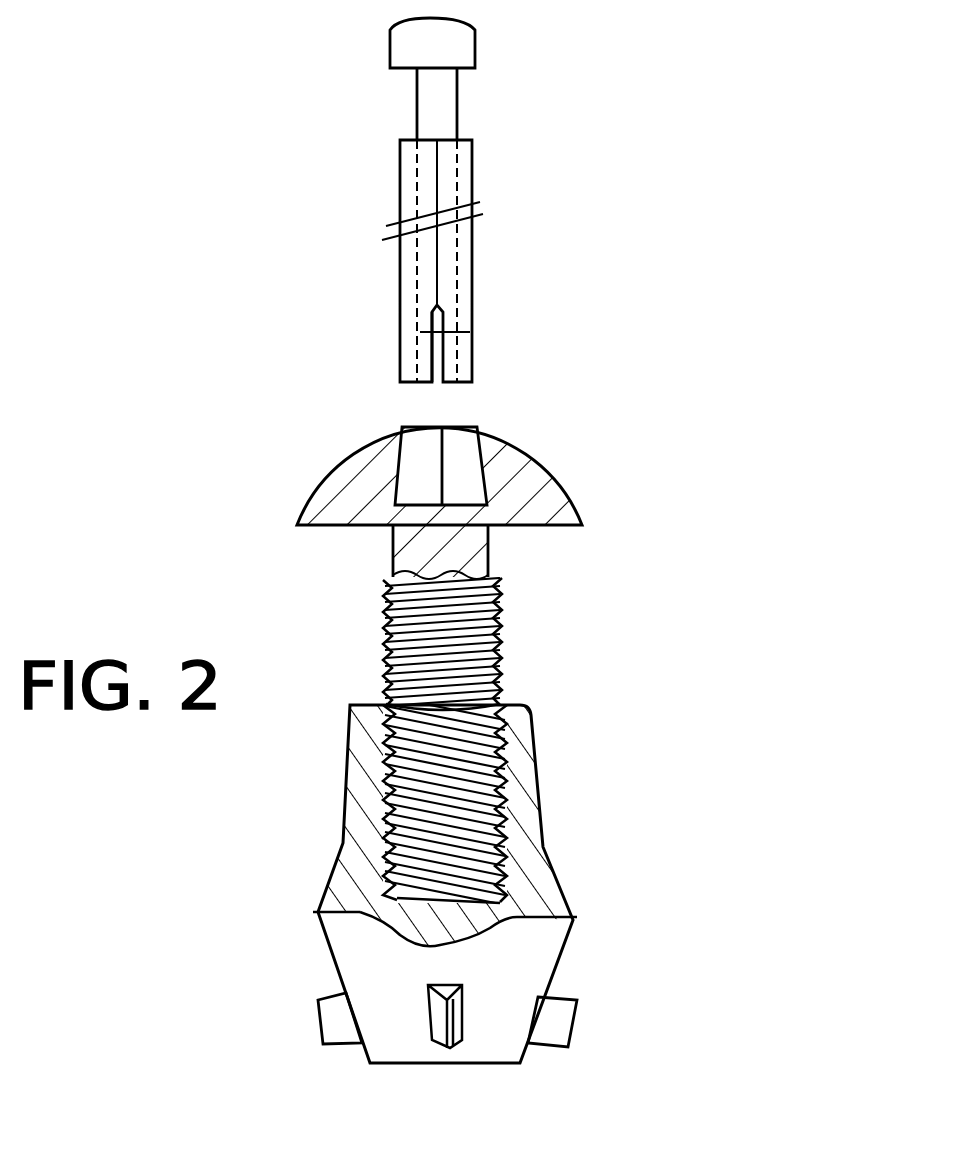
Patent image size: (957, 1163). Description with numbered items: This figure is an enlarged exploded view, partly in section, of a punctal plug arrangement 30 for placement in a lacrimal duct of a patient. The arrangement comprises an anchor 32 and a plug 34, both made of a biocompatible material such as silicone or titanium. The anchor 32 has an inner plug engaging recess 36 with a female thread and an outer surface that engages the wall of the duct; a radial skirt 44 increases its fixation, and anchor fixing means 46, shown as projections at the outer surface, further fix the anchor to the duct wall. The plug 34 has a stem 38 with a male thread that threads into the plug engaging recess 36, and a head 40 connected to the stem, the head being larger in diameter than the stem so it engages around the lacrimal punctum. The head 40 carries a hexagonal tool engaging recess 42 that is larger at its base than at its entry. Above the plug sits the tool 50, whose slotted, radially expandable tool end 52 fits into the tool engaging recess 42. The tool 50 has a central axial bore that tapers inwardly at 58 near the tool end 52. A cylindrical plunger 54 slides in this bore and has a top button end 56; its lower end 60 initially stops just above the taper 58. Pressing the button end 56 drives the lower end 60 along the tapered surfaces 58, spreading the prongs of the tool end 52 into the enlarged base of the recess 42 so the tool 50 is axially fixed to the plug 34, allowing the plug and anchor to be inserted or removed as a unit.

The punctal plug arrangement 30 is at (707, 582).
The anchor 32 is at (547, 857).
The plug 34 is at (570, 497).
The plug engaging recess 36 is at (473, 770).
The stem 38 is at (500, 623).
The head 40 is at (317, 480).
The tool engaging recess 42 is at (368, 415).
The radial skirt 44 is at (317, 915).
The anchor fixing means 46 is at (318, 1003).
The tool 50 is at (390, 195).
The tool end 52 is at (472, 360).
The plunger 54 is at (447, 115).
The button end 56 is at (475, 38).
The taper 58 is at (415, 352).
The lower end of the plunger 60 is at (490, 288).